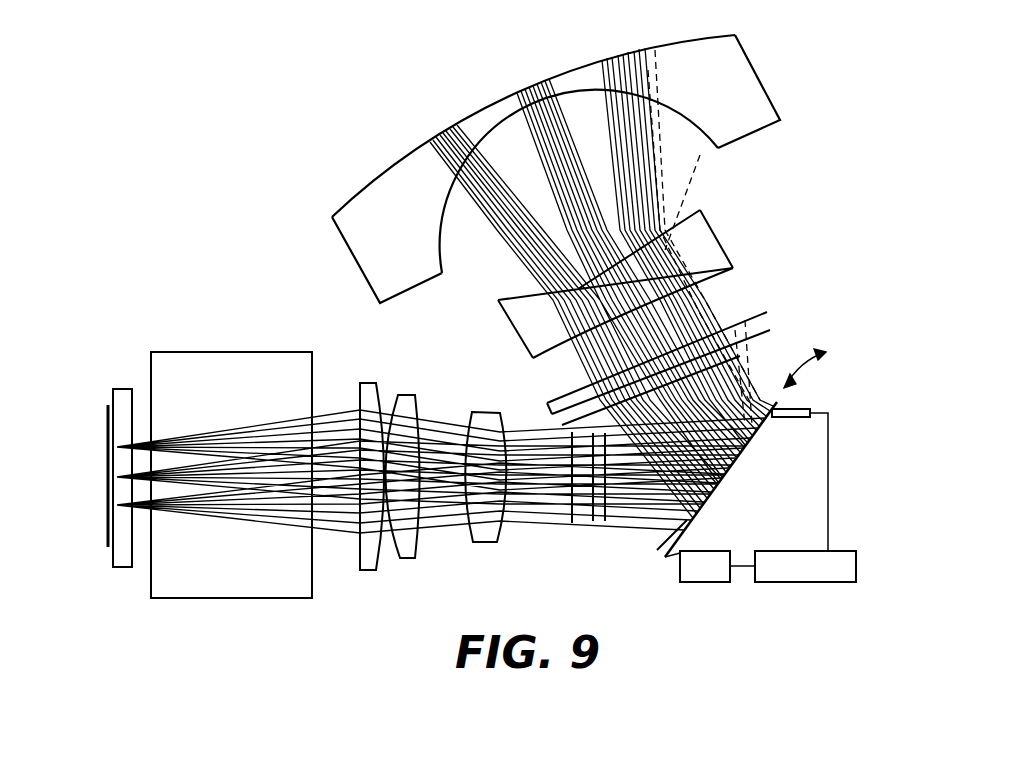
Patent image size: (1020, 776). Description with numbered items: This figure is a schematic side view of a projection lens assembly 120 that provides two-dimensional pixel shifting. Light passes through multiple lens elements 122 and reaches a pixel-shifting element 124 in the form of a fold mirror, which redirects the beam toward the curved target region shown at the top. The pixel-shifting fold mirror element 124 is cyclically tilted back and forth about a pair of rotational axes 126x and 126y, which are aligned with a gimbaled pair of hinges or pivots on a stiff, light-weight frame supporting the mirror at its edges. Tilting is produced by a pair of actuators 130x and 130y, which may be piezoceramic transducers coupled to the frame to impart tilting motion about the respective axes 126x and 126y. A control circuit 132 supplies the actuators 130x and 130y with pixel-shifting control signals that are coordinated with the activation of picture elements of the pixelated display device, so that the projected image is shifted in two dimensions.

The projection lens assembly 120 is at (260, 204).
The lens elements 122 is at (363, 572).
The pixel-shifting fold mirror element 124 is at (733, 462).
The rotational axis 126x is at (824, 349).
The rotational axis 126y is at (718, 488).
The actuator 130x is at (806, 408).
The actuator 130y is at (705, 583).
The control circuit 132 is at (800, 583).